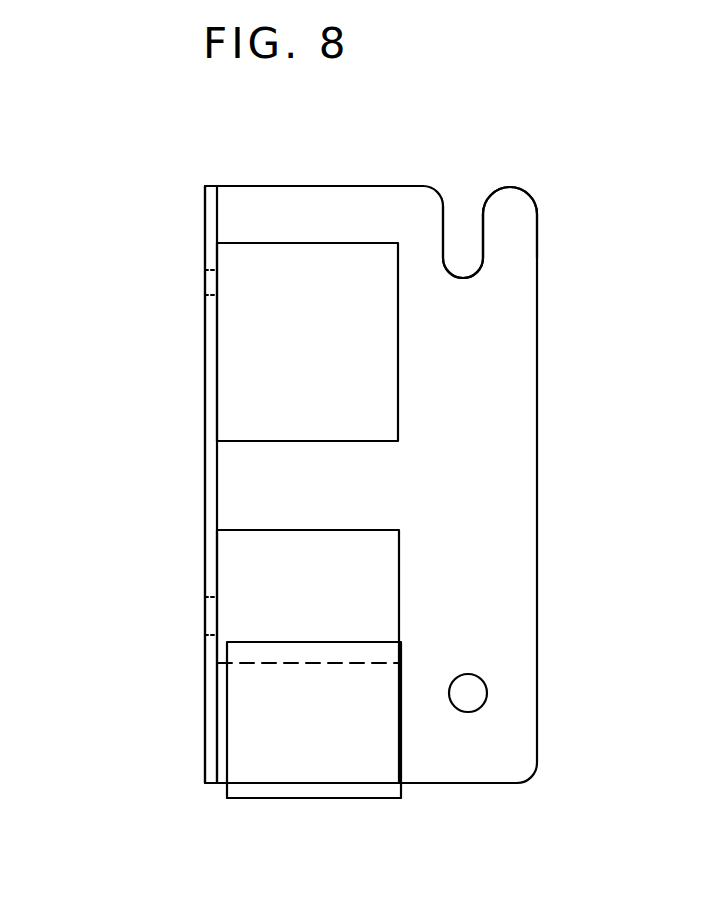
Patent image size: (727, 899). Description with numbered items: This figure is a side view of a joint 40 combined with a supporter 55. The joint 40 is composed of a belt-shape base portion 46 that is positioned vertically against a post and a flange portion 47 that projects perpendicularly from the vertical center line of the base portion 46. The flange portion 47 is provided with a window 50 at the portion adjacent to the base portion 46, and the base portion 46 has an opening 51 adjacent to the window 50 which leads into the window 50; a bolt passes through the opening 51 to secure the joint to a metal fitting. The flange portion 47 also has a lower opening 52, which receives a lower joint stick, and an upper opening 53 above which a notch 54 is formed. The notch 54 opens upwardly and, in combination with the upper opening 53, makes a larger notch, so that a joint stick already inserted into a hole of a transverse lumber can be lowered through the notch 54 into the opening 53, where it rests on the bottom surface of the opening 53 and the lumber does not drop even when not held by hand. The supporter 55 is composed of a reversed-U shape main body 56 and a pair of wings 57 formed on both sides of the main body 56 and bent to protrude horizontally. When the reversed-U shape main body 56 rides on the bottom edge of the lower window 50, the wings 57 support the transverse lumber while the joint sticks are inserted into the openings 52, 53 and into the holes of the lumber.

The joint 40 is at (326, 474).
The belt-shape base portion 46 is at (204, 397).
The flange portion 47 is at (505, 435).
The window 50 is at (265, 263).
The opening 51 is at (208, 278).
The opening 52 is at (478, 690).
The upper opening 53 is at (455, 277).
The notch 54 is at (463, 210).
The supporter 55 is at (243, 701).
The reversed-U shape main body 56 is at (335, 650).
The wings 57 is at (263, 800).